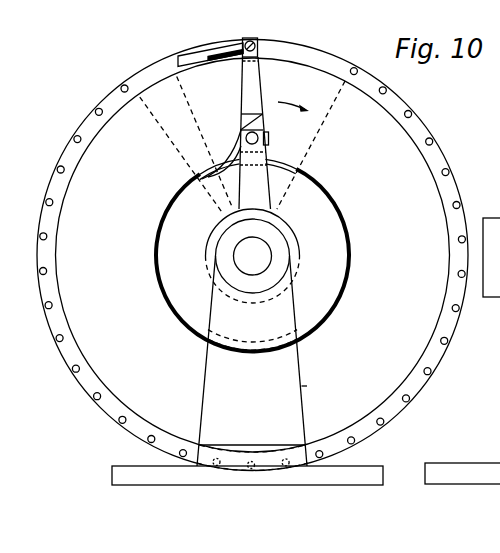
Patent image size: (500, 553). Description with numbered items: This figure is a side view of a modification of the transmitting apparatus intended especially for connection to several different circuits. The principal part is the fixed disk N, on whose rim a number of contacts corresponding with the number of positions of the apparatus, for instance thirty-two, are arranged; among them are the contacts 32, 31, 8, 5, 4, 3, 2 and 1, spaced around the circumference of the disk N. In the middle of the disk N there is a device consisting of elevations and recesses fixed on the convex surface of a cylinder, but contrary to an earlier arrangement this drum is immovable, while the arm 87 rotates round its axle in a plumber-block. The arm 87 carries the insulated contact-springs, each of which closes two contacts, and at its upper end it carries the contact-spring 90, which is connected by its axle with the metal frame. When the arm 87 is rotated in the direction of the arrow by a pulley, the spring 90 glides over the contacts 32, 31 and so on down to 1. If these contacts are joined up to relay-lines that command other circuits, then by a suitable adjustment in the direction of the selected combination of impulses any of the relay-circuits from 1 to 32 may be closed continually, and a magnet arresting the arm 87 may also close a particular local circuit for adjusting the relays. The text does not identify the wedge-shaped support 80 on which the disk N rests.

The contact 1 is at (122, 86).
The contact 2 is at (96, 110).
The contact 3 is at (74, 139).
The contact 4 is at (57, 169).
The contact 5 is at (46, 202).
The contact 8 is at (308, 388).
The contact 31 is at (385, 88).
The contact 32 is at (356, 69).
The wedge support 80 is at (252, 363).
The arm 87 is at (248, 92).
The contact-spring 90 is at (198, 55).
The fixed disk N is at (252, 255).